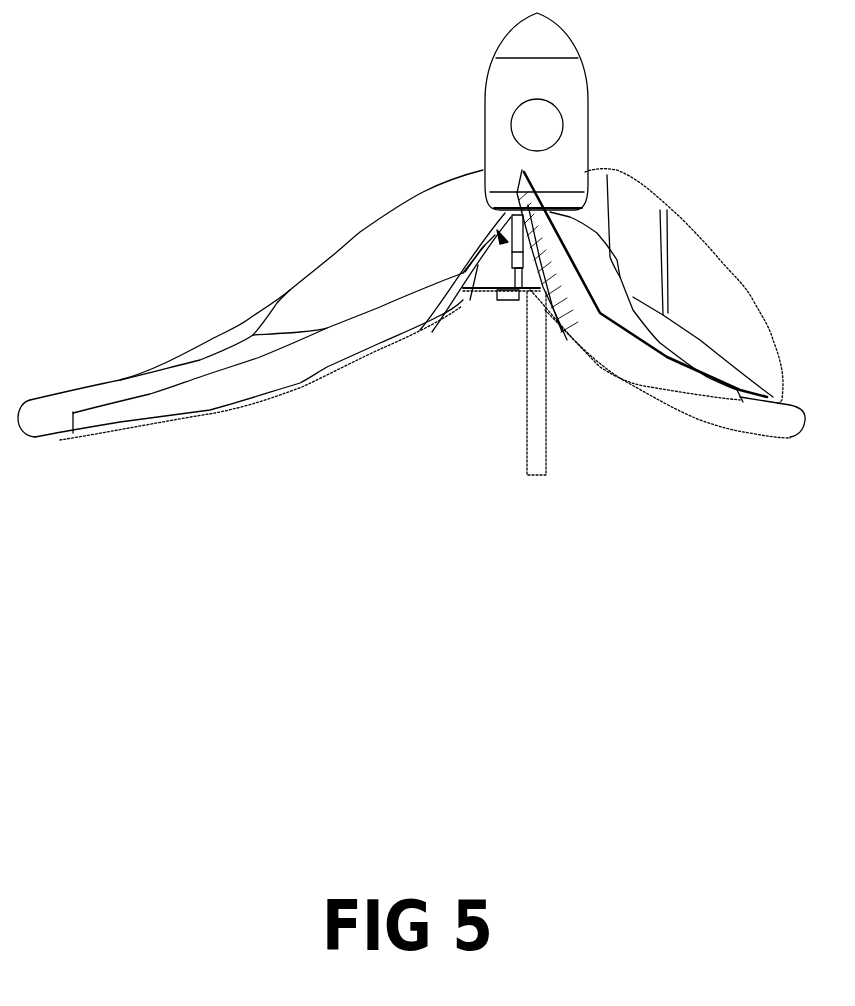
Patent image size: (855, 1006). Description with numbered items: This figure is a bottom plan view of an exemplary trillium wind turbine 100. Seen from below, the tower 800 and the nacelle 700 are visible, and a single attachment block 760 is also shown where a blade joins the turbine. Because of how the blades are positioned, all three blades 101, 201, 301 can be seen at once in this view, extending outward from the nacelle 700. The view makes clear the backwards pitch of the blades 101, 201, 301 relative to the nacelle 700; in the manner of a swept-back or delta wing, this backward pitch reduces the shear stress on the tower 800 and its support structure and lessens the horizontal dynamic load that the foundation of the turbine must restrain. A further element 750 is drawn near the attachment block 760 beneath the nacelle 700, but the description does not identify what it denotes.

The trillium wind turbine 100 is at (140, 822).
The blade 101 is at (238, 258).
The blade 201 is at (671, 196).
The blade 301 is at (672, 452).
The nacelle 700 is at (485, 100).
The rod 750 is at (527, 472).
The attachment block 760 is at (476, 341).
The tower 800 is at (560, 118).